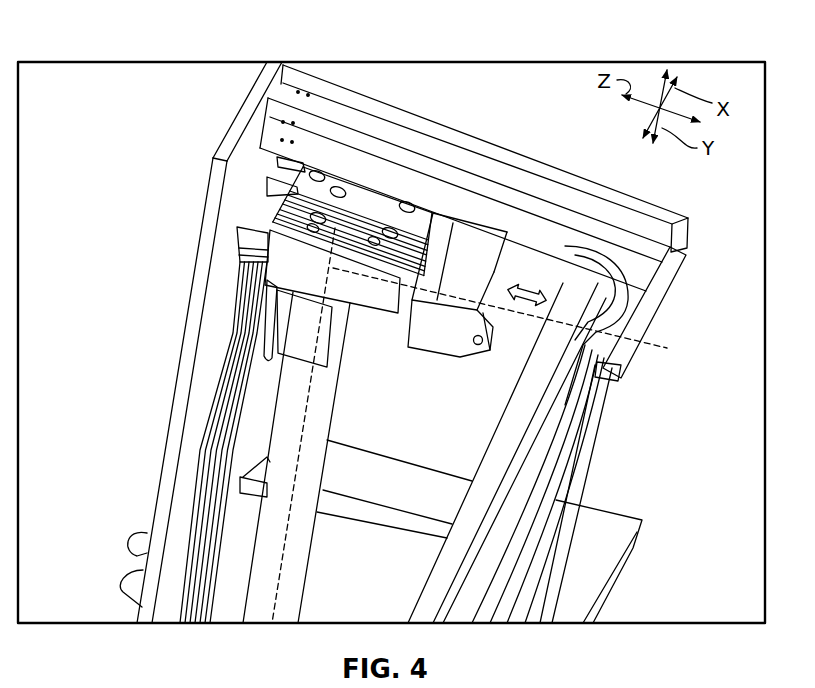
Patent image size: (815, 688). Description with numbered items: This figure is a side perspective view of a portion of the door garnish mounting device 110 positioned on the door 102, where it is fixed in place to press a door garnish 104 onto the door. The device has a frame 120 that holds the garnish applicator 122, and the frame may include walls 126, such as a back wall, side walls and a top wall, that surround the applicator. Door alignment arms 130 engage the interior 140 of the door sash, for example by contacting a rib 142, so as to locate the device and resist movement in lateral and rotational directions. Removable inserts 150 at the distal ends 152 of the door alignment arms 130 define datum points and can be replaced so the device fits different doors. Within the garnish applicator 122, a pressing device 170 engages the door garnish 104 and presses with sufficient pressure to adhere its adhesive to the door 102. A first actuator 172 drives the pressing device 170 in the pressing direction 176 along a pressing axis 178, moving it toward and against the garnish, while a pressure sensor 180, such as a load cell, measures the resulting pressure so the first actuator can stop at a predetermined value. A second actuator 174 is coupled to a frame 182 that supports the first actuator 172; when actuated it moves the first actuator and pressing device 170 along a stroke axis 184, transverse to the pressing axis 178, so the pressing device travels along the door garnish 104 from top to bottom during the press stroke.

The door 102 is at (530, 588).
The door garnish 104 is at (604, 230).
The door garnish mounting device 110 is at (228, 88).
The frame 120 is at (231, 143).
The garnish applicator 122 is at (390, 195).
The walls 126 is at (173, 433).
The door alignment arms 130 is at (518, 152).
The interior 140 is at (573, 461).
The rib 142 is at (540, 540).
The removable inserts 150 is at (667, 233).
The distal ends 152 is at (623, 375).
The pressing device 170 is at (513, 320).
The first actuator 172 is at (247, 238).
The second actuator 174 is at (275, 520).
The pressing direction 176 is at (544, 283).
The pressing axis 178 is at (657, 348).
The pressure sensor 180 is at (448, 226).
The frame 182 is at (270, 270).
The stroke axis 184 is at (282, 557).